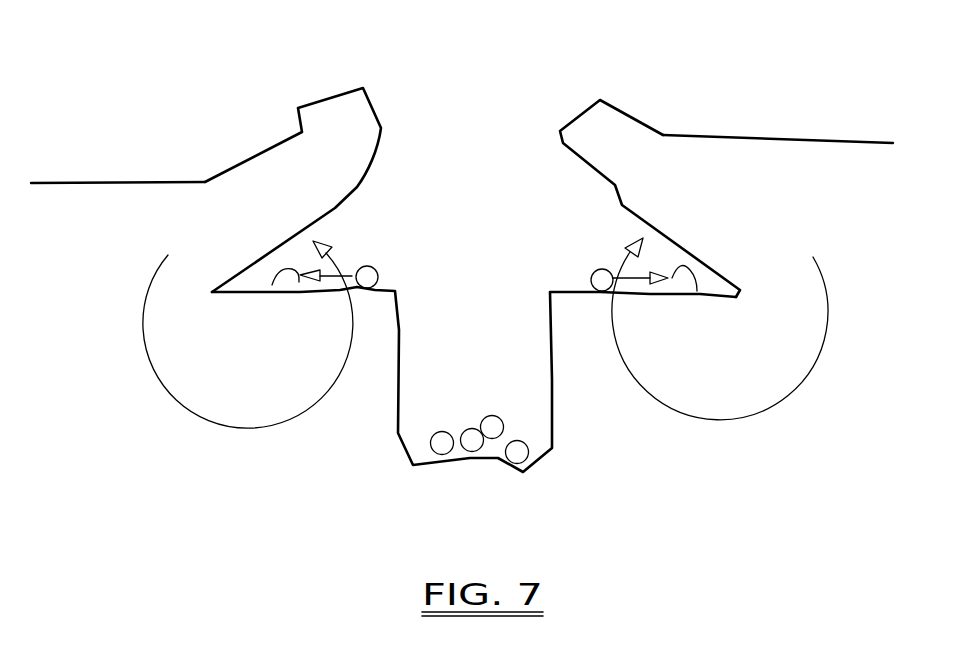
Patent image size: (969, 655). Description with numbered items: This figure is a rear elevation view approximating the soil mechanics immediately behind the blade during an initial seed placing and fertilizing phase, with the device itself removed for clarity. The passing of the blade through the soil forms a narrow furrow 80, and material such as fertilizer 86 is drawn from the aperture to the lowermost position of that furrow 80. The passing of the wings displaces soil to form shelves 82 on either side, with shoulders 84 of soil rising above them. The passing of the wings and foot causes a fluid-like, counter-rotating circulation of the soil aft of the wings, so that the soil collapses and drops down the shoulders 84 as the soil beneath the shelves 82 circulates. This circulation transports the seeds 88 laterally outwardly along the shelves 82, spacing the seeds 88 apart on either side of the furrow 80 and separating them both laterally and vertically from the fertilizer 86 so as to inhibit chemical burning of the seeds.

The narrow furrow 80 is at (437, 68).
The shelves 82 is at (303, 297).
The shoulders 84 is at (337, 207).
The fertilizer 86 is at (490, 473).
The seeds 88 is at (377, 277).